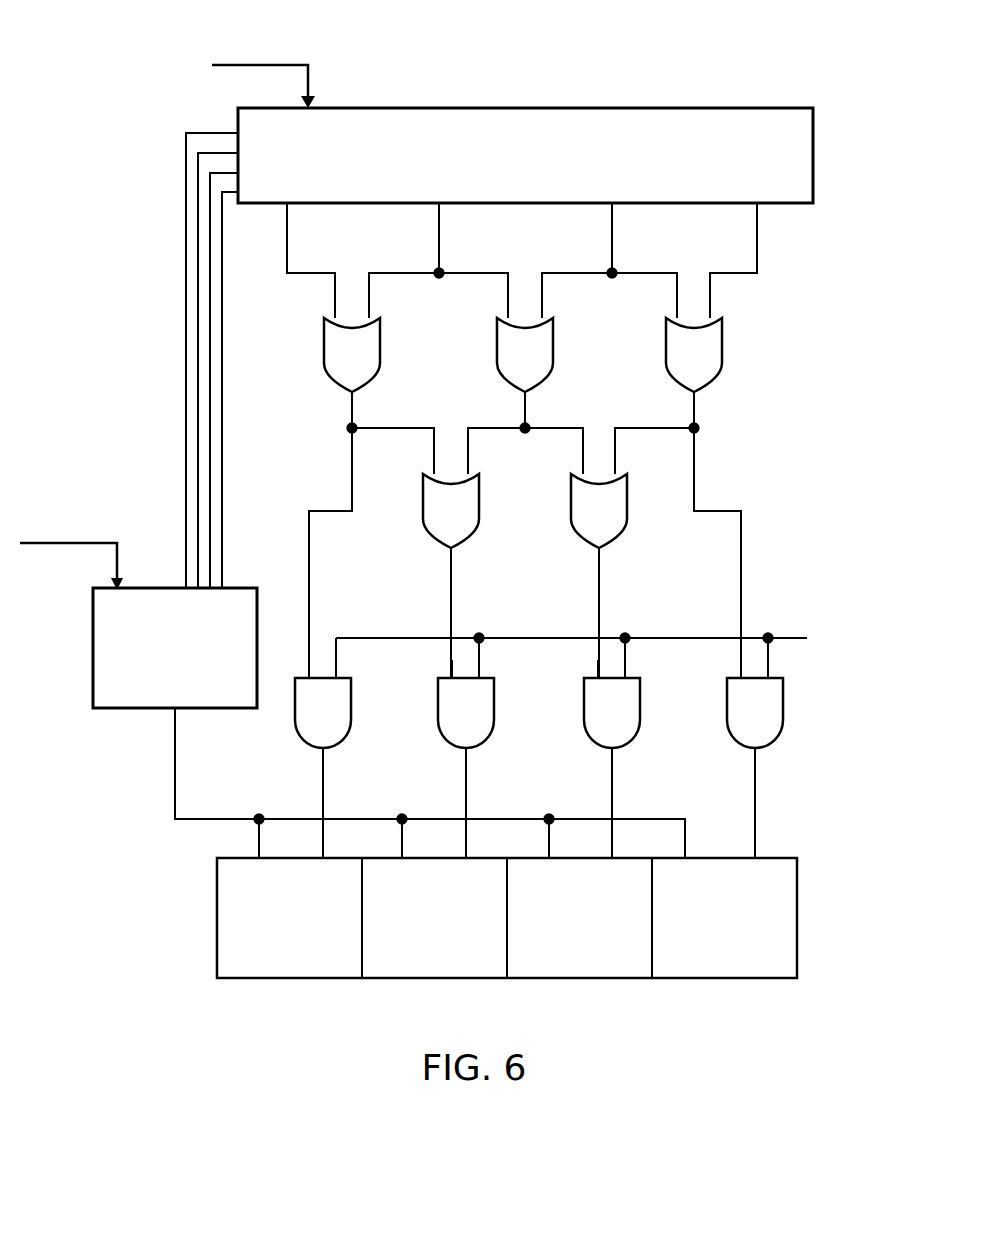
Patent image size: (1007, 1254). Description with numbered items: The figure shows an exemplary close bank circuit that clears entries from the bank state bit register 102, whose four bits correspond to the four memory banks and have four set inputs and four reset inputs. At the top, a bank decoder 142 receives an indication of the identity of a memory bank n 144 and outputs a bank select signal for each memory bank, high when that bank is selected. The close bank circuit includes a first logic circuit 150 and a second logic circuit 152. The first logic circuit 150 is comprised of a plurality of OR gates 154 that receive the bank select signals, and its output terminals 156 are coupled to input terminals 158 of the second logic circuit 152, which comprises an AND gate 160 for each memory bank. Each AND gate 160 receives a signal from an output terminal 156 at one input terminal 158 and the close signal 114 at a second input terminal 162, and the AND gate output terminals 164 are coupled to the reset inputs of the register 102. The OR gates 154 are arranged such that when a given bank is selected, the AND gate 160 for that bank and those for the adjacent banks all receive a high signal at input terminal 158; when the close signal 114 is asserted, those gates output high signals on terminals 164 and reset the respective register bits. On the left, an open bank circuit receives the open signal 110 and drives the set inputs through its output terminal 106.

The open signal 110 is at (104, 114).
The memory bank n identity indication 144 is at (258, 62).
The bank decoder 142 is at (662, 108).
The first logic circuit 150 is at (795, 411).
The OR gates 154 is at (335, 300).
The output terminals of the first logic circuit 156 is at (352, 479).
The close signal 114 is at (849, 609).
The input terminals of the second logic circuit 158 is at (309, 661).
The second input terminal 162 is at (336, 638).
The AND gate 160 is at (306, 722).
The second logic circuit 152 is at (830, 748).
The AND gate output terminals 164 is at (323, 776).
The output terminal of the open bank circuit 106 is at (205, 819).
The bank state bit register 102 is at (217, 922).